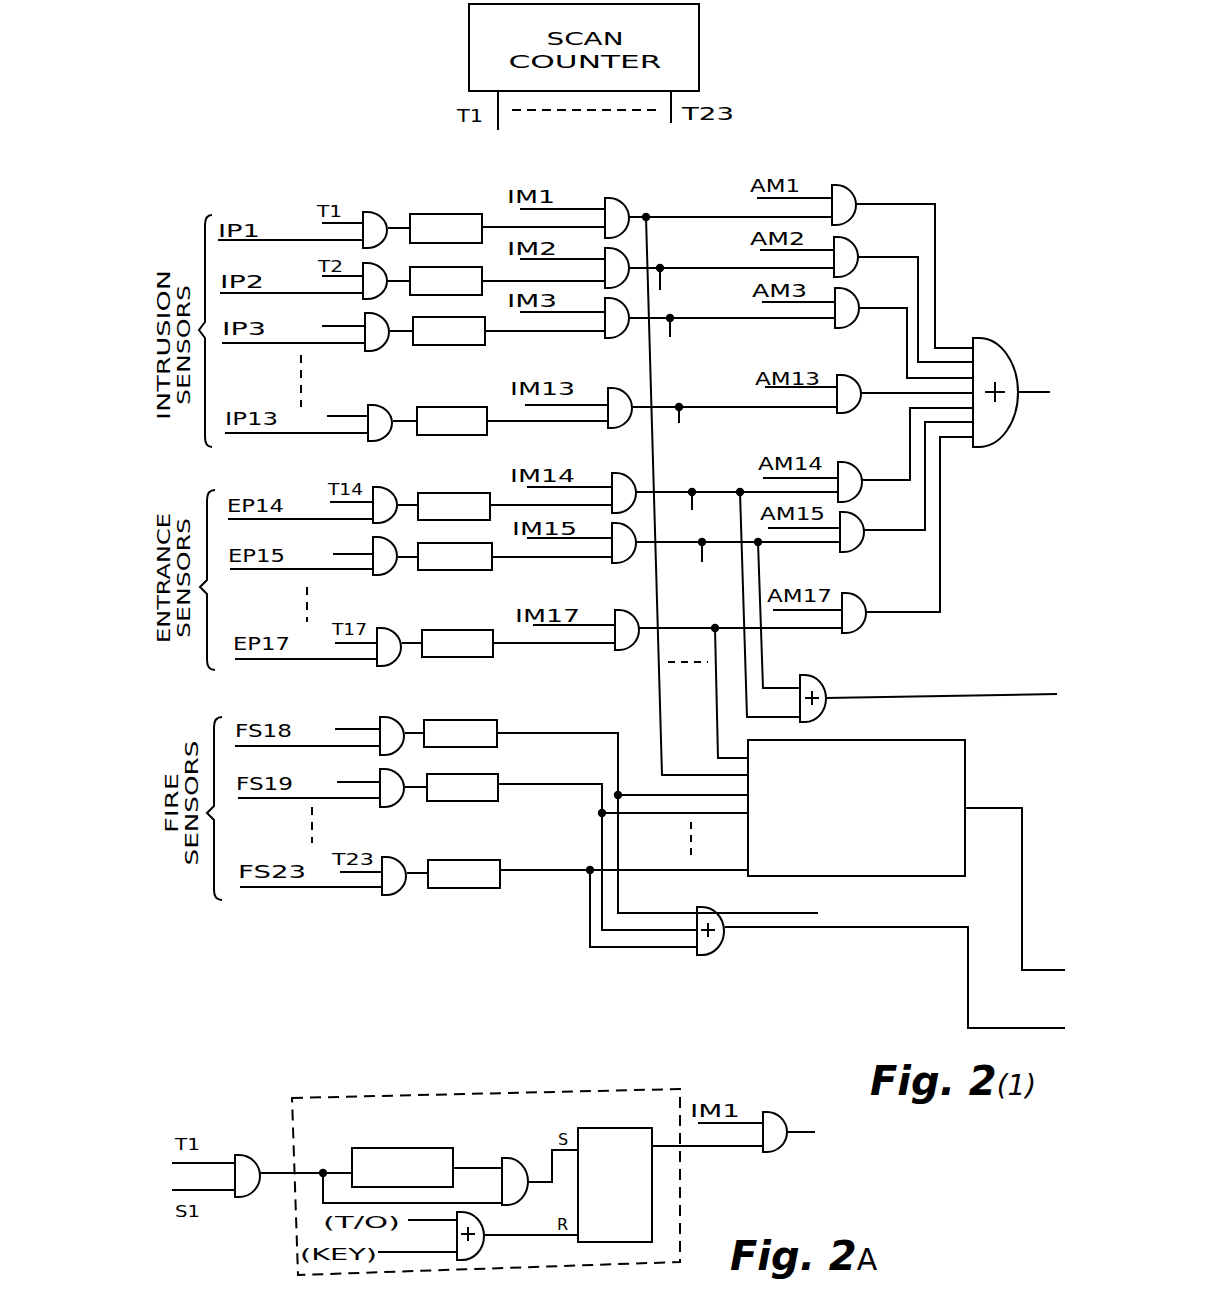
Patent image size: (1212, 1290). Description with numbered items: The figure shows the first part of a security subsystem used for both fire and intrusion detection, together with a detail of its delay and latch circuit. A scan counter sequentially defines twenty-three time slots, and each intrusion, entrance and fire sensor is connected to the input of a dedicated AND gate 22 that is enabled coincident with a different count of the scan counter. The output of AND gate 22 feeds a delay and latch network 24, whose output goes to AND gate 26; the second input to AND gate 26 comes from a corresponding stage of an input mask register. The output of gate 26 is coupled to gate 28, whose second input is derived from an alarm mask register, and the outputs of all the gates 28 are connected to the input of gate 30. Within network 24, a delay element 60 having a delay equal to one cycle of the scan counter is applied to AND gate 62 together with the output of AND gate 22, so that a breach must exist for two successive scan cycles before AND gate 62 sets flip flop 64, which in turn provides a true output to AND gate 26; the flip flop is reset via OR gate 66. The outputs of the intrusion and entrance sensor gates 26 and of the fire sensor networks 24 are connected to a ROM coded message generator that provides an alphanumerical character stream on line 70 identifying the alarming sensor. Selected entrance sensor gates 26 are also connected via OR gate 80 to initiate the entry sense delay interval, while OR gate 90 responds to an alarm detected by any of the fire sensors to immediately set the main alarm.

The AND gate 22 is at (376, 212).
In FIG. 2A, the AND gate 22 is at (262, 1135).
The delay and latch network 24 is at (447, 214).
In FIG. 2A, the delay and latch network 24 is at (372, 1083).
The AND gate 26 is at (615, 198).
In FIG. 2A, the AND gate 26 is at (775, 1152).
The AND gate 28 is at (842, 185).
The OR gate 30 is at (990, 338).
In FIG. 2A, the delay element 60 is at (404, 1148).
In FIG. 2A, the AND gate 62 is at (520, 1147).
In FIG. 2A, the flip flop 64 is at (605, 1128).
In FIG. 2A, the OR gate 66 is at (481, 1239).
The output line 70 is at (989, 808).
The OR gate 80 is at (814, 680).
The OR gate 90 is at (711, 913).